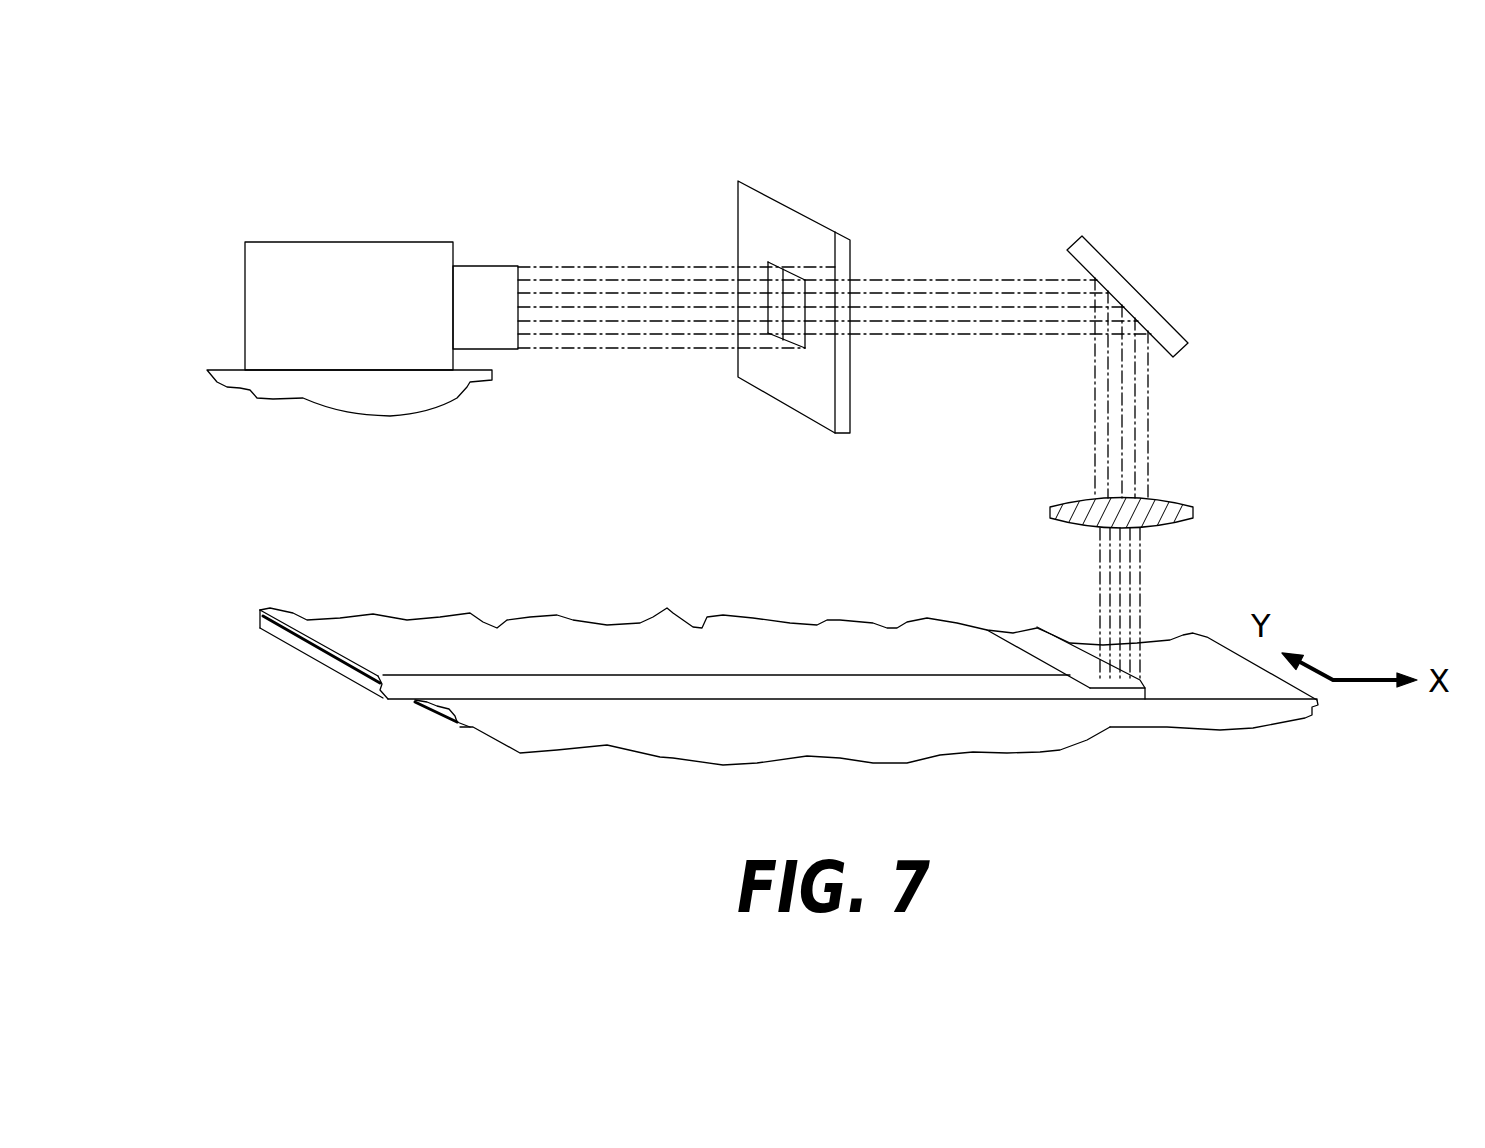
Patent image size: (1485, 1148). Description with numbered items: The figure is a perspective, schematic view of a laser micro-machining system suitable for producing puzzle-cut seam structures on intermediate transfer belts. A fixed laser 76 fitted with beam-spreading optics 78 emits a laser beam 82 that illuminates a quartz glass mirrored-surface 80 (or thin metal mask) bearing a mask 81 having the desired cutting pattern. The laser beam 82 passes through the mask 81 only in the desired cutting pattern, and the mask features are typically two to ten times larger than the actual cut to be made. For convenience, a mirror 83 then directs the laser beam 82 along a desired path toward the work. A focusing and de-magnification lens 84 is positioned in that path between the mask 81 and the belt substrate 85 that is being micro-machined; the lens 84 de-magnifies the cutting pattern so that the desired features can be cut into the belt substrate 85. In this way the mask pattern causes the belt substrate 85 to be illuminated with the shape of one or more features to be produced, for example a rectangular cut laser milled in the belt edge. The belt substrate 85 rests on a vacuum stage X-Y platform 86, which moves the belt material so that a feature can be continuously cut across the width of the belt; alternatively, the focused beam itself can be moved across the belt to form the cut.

The laser 76 is at (355, 242).
The beam-spreading optics 78 is at (492, 265).
The quartz glass mirrored-surface 80 is at (805, 212).
The mask 81 is at (805, 348).
The laser beam 82 is at (625, 267).
The mirror 83 is at (1142, 293).
The focusing and de-magnification lens 84 is at (1193, 505).
The belt substrate 85 is at (887, 628).
The vacuum stage X-Y platform 86 is at (1247, 730).